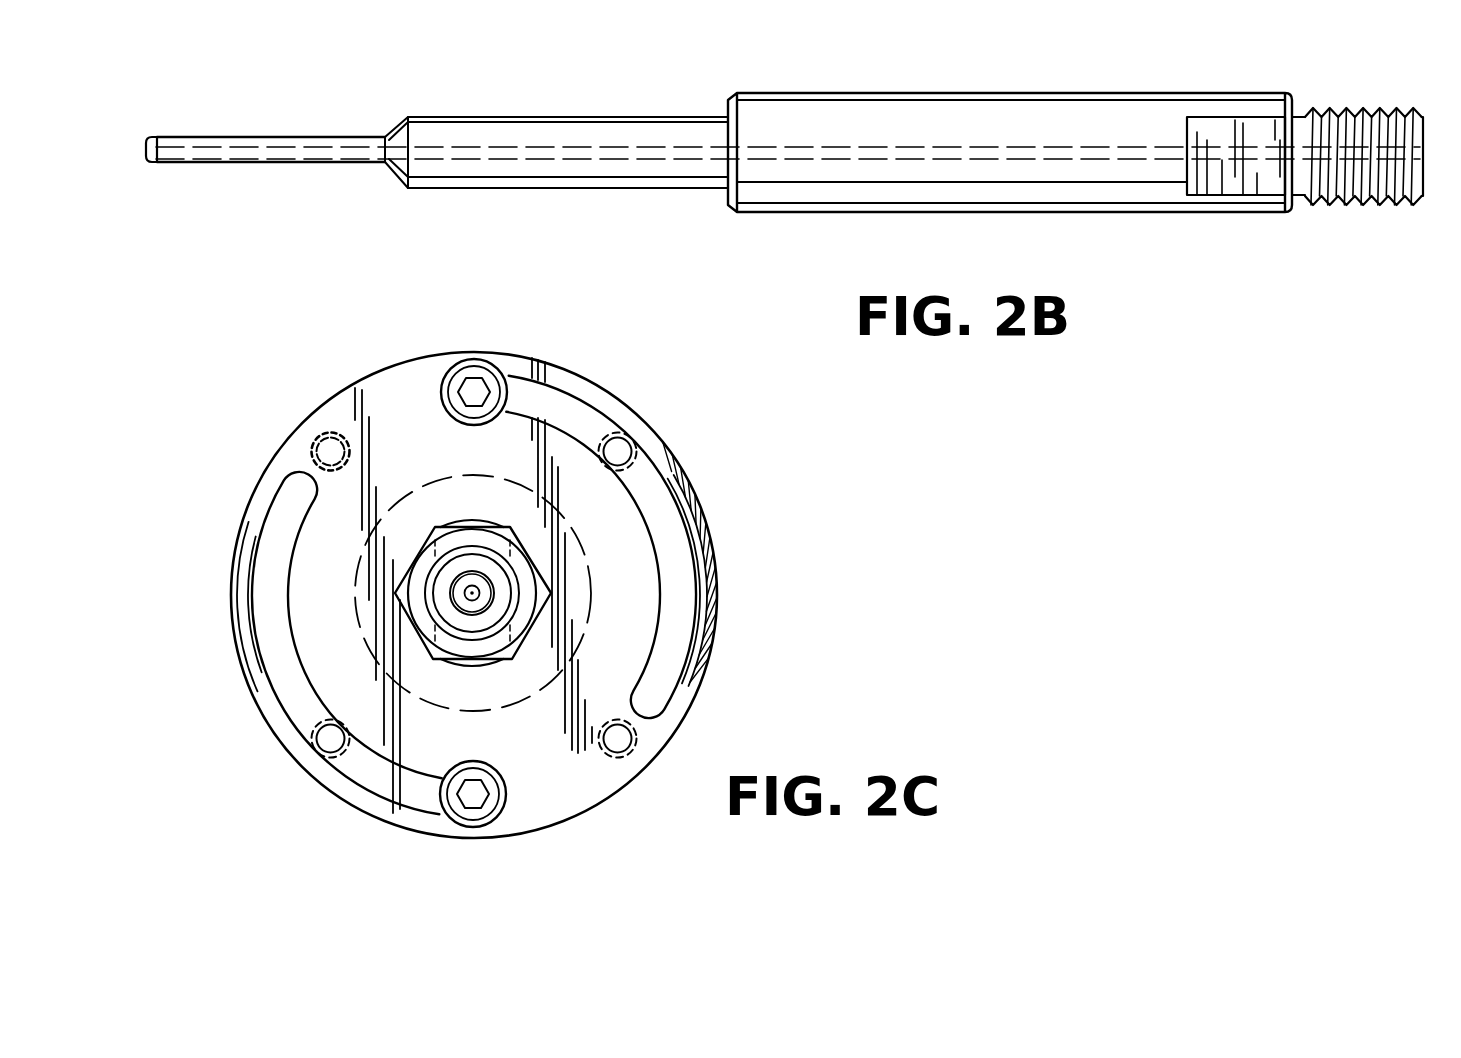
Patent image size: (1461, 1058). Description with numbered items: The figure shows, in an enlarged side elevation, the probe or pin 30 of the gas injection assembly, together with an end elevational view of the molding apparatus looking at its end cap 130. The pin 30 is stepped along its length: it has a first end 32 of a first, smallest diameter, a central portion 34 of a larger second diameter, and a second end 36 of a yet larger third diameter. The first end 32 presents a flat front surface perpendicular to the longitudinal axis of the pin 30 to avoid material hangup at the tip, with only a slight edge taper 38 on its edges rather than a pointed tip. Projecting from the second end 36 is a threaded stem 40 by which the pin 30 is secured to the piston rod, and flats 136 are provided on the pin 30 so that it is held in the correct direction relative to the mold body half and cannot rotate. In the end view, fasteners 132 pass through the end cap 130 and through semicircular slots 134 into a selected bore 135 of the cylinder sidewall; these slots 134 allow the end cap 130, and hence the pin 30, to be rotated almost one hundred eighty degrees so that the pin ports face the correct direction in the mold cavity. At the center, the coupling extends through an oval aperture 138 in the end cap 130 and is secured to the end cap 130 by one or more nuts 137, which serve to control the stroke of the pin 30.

In FIG. 2B, the probe or pin 30 is at (1102, 226).
In FIG. 2B, the first end 32 is at (288, 137).
In FIG. 2B, the central portion 34 is at (536, 130).
In FIG. 2B, the second end 36 is at (978, 122).
In FIG. 2B, the edge taper 38 is at (154, 136).
In FIG. 2B, the threaded stem 40 is at (1352, 108).
In FIG. 2C, the end cap 130 is at (287, 438).
In FIG. 2C, the fasteners 132 is at (498, 369).
In FIG. 2C, the semicircular slots 134 is at (260, 554).
In FIG. 2C, the bore 135 is at (636, 446).
In FIG. 2B, the flats 136 is at (1212, 125).
In FIG. 2C, the nuts 137 is at (397, 598).
In FIG. 2C, the oval aperture 138 is at (463, 520).